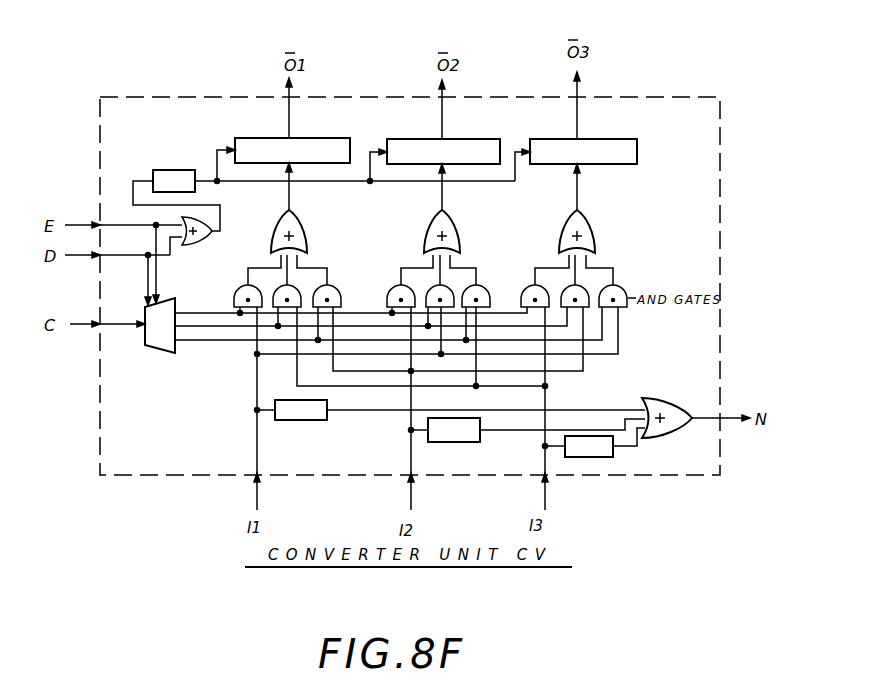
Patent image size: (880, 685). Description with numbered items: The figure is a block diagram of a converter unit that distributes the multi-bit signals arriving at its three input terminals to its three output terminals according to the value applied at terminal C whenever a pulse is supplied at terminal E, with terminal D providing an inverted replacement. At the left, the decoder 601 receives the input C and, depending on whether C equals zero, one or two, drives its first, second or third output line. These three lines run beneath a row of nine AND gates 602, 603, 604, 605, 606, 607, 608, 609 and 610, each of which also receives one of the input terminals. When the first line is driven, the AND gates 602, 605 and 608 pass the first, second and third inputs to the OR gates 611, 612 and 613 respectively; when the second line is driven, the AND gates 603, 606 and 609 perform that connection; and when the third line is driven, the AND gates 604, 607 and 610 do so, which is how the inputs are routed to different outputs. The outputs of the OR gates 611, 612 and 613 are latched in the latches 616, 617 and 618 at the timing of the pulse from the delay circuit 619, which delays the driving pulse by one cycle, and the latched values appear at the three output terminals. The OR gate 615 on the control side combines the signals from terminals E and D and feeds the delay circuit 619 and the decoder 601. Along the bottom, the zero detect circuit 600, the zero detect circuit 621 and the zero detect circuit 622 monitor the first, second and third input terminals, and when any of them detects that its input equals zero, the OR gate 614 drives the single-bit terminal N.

The zero detect circuit 600 is at (285, 420).
The decoder 601 is at (148, 343).
The AND gate 602 is at (235, 281).
The AND gate 603 is at (284, 290).
The AND gate 604 is at (324, 290).
The AND gate 605 is at (390, 290).
The AND gate 606 is at (437, 290).
The AND gate 607 is at (474, 290).
The AND gate 608 is at (526, 290).
The AND gate 609 is at (571, 290).
The AND gate 610 is at (609, 290).
The OR gate 611 is at (306, 242).
The OR gate 612 is at (458, 242).
The OR gate 613 is at (594, 242).
The OR gate 614 is at (690, 390).
The OR gate 615 is at (188, 247).
The latch 616 is at (273, 119).
The latch 617 is at (422, 120).
The latch 618 is at (573, 122).
The delay circuit 619 is at (152, 169).
The zero detect circuit 621 is at (448, 442).
The zero detect circuit 622 is at (580, 458).